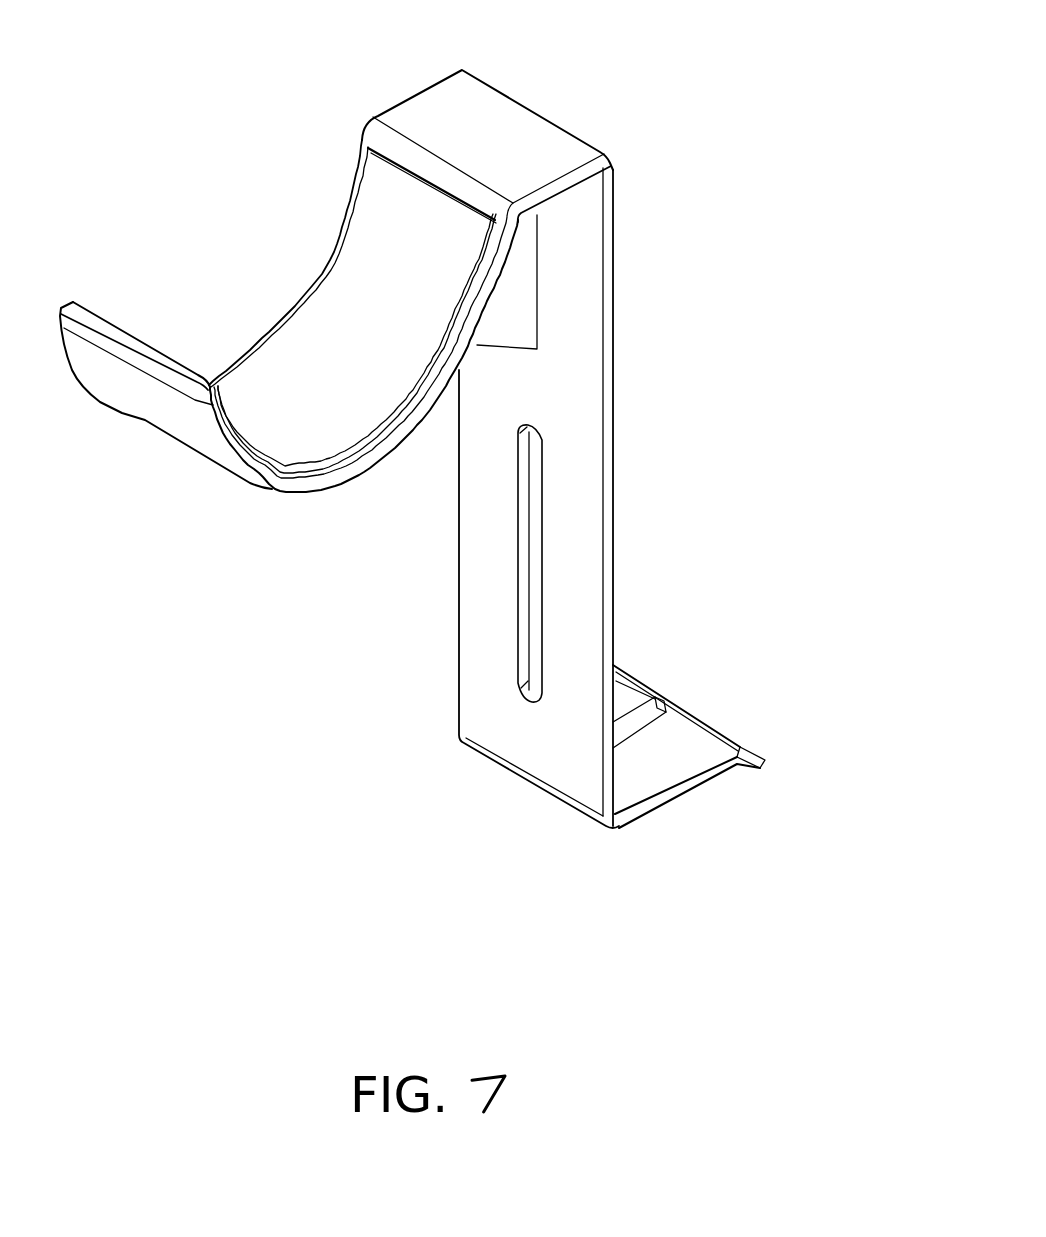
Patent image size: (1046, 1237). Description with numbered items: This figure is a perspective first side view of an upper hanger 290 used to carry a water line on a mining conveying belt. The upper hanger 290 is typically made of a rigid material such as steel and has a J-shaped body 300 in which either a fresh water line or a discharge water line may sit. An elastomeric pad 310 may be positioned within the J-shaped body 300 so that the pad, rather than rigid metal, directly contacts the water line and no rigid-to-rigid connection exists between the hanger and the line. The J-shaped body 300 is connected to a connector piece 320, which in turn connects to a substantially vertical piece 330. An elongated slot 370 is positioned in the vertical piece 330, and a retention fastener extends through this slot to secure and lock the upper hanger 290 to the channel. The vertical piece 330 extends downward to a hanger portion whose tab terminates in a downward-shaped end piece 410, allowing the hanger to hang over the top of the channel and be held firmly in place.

The upper hanger 290 is at (793, 270).
The J-shaped body 300 is at (253, 485).
The elastomeric pad 310 is at (367, 328).
The connector piece 320 is at (413, 108).
The vertical piece 330 is at (700, 326).
The elongated slot 370 is at (542, 572).
The downward-shaped end piece 410 is at (862, 772).